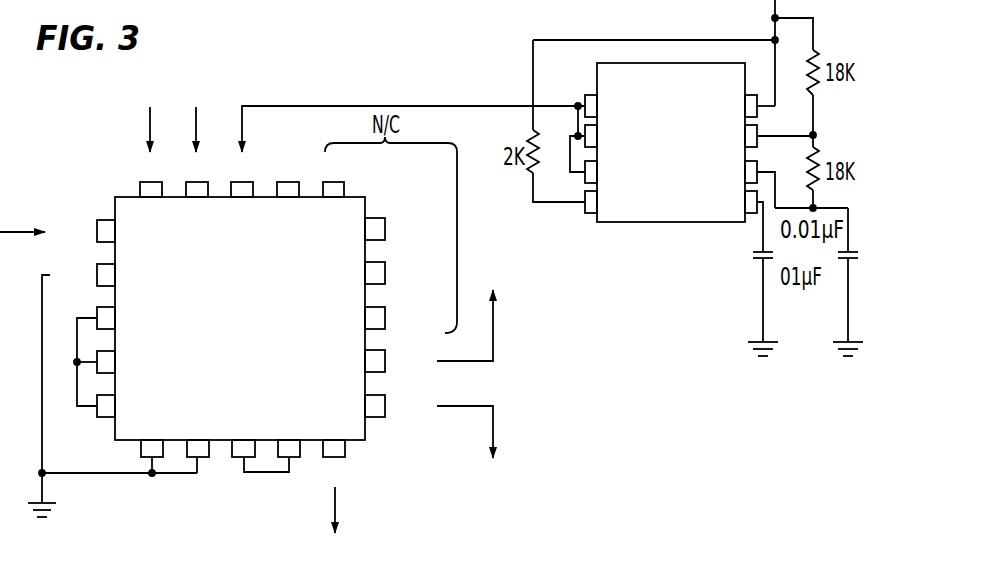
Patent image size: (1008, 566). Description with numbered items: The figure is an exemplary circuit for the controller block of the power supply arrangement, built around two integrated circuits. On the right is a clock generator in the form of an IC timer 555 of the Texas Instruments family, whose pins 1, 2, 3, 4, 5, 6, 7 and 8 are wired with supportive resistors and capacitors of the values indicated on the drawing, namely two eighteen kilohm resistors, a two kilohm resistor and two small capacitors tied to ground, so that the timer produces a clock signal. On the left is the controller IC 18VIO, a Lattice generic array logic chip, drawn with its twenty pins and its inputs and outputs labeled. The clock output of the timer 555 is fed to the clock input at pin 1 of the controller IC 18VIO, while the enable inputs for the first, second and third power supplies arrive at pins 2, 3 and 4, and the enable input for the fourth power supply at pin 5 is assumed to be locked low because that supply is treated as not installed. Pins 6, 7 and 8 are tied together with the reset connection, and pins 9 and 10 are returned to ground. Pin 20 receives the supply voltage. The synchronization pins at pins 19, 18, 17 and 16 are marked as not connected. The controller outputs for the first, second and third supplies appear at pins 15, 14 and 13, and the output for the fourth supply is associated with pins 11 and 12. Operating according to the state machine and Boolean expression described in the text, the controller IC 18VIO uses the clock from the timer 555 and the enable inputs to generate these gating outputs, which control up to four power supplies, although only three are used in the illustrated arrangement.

The controller IC 18VIO is at (240, 318).
The pin 1 is at (406, 167).
The pin 2 is at (197, 167).
The pin 3 is at (151, 167).
The pin 4 is at (64, 232).
The pin 5 is at (78, 389).
The pin 6 is at (102, 355).
The pin 7 is at (101, 362).
The pin 8 is at (103, 419).
The pin 9 is at (119, 445).
The pin 10 is at (198, 444).
The pin 11 is at (260, 459).
The pin 12 is at (289, 436).
The pin 13 is at (335, 474).
The pin 14 is at (418, 425).
The pin 15 is at (418, 332).
The pin 16 is at (390, 318).
The pin 17 is at (390, 273).
The pin 18 is at (390, 229).
The pin 19 is at (334, 191).
The pin 20 is at (285, 191).
The IC timer 555 is at (671, 142).